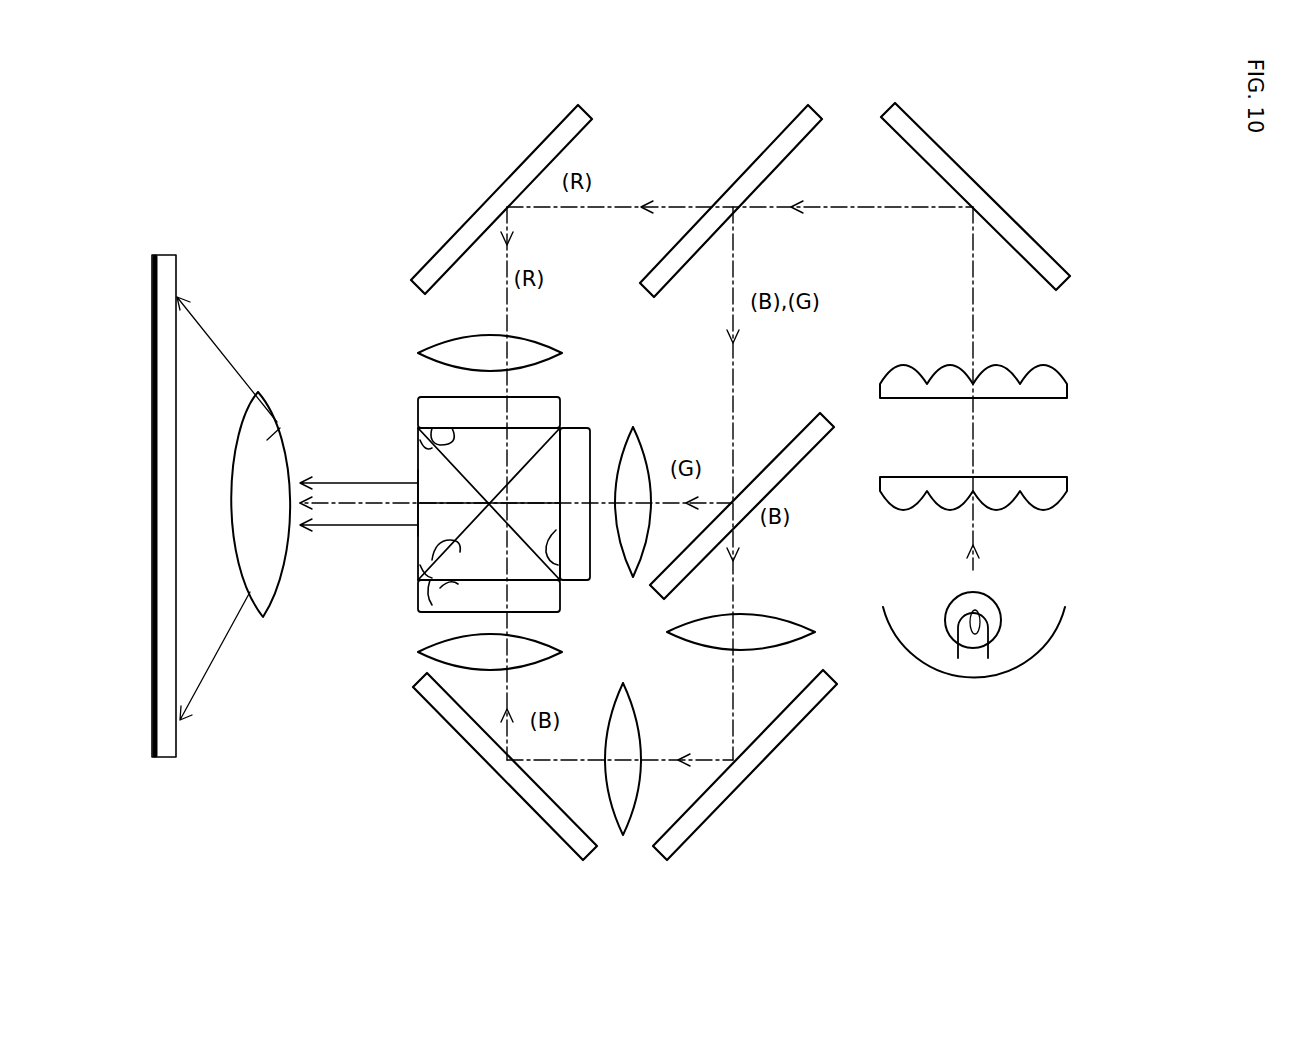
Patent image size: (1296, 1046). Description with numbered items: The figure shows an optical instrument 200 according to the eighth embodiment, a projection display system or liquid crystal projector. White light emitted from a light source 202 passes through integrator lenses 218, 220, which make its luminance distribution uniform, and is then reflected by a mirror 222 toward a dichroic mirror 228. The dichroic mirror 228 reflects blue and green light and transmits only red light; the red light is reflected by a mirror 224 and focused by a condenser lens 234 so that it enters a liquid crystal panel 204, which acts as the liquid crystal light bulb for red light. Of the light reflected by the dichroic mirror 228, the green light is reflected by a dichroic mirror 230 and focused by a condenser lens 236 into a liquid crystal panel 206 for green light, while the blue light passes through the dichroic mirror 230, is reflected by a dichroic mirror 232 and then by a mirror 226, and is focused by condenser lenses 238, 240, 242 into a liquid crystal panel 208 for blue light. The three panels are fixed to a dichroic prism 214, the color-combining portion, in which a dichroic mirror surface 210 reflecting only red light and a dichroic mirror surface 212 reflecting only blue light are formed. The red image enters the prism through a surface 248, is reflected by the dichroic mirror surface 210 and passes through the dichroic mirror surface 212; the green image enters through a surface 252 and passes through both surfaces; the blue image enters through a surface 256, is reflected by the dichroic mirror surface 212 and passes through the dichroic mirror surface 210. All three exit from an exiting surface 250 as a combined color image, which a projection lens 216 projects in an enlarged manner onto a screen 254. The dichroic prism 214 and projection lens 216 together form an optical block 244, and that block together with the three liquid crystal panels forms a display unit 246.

The optical instrument 200 is at (1083, 213).
The light source 202 is at (995, 605).
The liquid crystal panel 204 is at (418, 415).
The liquid crystal panel 206 is at (590, 430).
The liquid crystal panel 208 is at (535, 603).
The dichroic mirror surface 210 is at (440, 543).
The dichroic mirror surface 212 is at (427, 443).
The dichroic prism 214 is at (428, 565).
The projection lens 216 is at (274, 430).
The integrator lens 218 is at (1050, 495).
The integrator lens 220 is at (1055, 383).
The mirror 222 is at (955, 157).
The mirror 224 is at (498, 190).
The mirror 226 is at (487, 752).
The dichroic mirror 228 is at (752, 165).
The dichroic mirror 230 is at (778, 448).
The dichroic mirror 232 is at (780, 733).
The condenser lens 234 is at (465, 340).
The condenser lens 236 is at (635, 465).
The condenser lens 238 is at (770, 614).
The condenser lens 240 is at (630, 793).
The condenser lens 242 is at (450, 660).
The optical block 244 is at (318, 658).
The display unit 246 is at (577, 383).
The surface 248 is at (438, 440).
The exiting surface 250 is at (418, 473).
The surface 252 is at (550, 565).
The screen 254 is at (173, 757).
The surface 256 is at (430, 610).